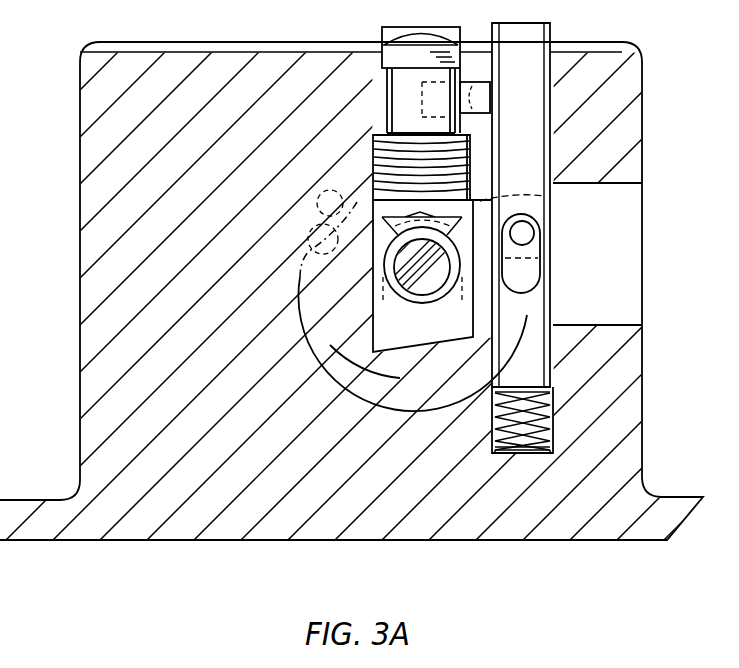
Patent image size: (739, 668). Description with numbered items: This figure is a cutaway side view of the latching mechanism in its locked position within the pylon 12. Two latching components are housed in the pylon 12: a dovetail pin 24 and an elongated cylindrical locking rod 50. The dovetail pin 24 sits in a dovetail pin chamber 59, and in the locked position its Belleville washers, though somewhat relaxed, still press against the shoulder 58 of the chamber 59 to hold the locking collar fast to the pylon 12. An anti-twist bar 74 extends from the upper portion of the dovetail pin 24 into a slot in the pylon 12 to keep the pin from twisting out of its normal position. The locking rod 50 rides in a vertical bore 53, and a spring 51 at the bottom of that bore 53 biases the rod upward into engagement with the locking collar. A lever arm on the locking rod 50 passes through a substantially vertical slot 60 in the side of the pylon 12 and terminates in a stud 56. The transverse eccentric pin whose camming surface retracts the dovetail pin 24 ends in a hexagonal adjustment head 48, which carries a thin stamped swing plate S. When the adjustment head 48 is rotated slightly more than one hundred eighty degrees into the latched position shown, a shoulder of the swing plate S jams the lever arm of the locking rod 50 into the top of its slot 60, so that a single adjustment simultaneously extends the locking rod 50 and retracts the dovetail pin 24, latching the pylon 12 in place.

The pylon 12 is at (82, 118).
The dovetail pin 24 is at (393, 92).
The shoulder 58 is at (366, 150).
The adjustment head 48 is at (422, 293).
The swing plate S is at (305, 316).
The dovetail pin chamber 59 is at (347, 356).
The locking rod 50 is at (533, 100).
The anti-twist bar 74 is at (475, 84).
The stud 56 is at (537, 218).
The vertical slot 60 is at (523, 280).
The spring 51 is at (555, 418).
The vertical bore 53 is at (546, 434).